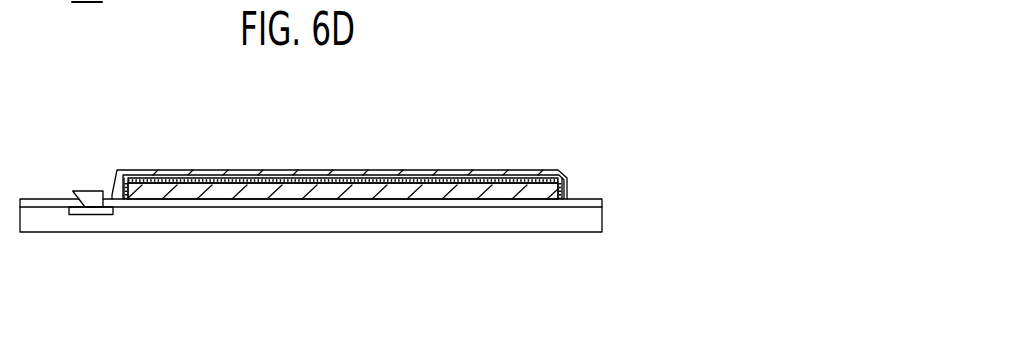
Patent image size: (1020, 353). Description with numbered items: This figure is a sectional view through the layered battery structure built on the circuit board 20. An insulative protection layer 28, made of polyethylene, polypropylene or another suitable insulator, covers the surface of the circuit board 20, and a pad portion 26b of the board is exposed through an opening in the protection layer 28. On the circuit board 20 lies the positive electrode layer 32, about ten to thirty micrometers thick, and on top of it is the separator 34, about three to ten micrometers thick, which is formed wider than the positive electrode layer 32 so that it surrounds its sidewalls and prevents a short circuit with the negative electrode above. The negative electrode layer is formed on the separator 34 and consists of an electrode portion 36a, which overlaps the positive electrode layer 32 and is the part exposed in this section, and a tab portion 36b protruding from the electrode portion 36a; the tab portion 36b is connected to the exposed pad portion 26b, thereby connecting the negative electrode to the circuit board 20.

The circuit board 20 is at (595, 219).
The protection layer 28 is at (602, 201).
The pad portion 26b is at (91, 208).
The tab portion 36b is at (88, 191).
The electrode portion 36a is at (403, 170).
The positive electrode layer 32 is at (490, 196).
The separator 34 is at (567, 177).